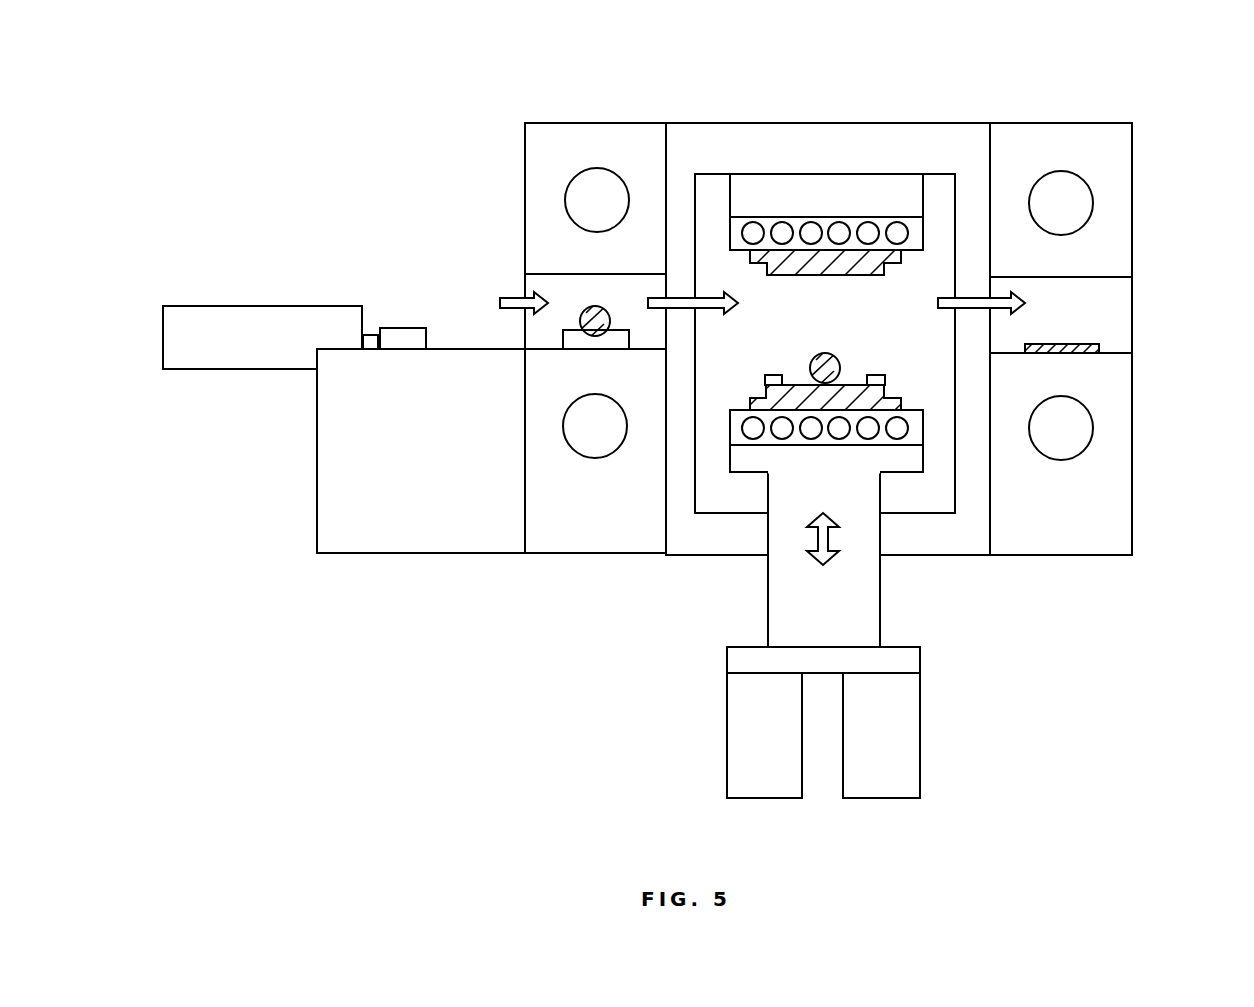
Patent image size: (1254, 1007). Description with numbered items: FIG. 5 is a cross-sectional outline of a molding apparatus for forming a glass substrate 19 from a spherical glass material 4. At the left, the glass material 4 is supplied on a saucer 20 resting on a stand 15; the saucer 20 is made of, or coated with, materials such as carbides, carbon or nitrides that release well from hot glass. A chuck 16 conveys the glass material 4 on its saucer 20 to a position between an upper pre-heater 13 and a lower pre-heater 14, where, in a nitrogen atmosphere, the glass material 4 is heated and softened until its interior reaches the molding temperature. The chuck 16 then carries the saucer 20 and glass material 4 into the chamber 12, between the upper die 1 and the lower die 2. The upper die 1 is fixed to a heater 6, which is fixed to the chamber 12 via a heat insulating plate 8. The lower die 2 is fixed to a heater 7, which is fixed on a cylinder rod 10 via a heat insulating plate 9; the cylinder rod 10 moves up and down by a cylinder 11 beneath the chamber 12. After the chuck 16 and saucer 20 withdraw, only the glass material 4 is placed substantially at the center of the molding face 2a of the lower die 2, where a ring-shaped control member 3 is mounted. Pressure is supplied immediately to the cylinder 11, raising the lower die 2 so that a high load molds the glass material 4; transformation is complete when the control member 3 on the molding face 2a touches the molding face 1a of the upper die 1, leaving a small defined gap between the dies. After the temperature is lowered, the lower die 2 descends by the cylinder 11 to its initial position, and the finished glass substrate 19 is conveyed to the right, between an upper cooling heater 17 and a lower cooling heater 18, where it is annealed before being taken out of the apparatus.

The upper die 1 is at (892, 258).
The molding face of the upper die 1a is at (818, 278).
The lower die 2 is at (892, 403).
The molding face of the lower die 2a is at (858, 382).
The control member 3 is at (766, 377).
The glass material 4 is at (588, 313).
The heater 6 is at (740, 242).
The heater 7 is at (740, 418).
The heat insulating plate 8 is at (815, 187).
The heat insulating plate 9 is at (745, 462).
The cylinder rod 10 is at (857, 586).
The cylinder 11 is at (900, 731).
The chamber 12 is at (888, 145).
The upper pre-heater 13 is at (547, 145).
The lower pre-heater 14 is at (553, 525).
The stand 15 is at (412, 515).
The chuck 16 is at (405, 343).
The upper cooling heater 17 is at (1115, 158).
The lower cooling heater 18 is at (1105, 518).
The glass substrate 19 is at (1085, 345).
The saucer 20 is at (571, 343).